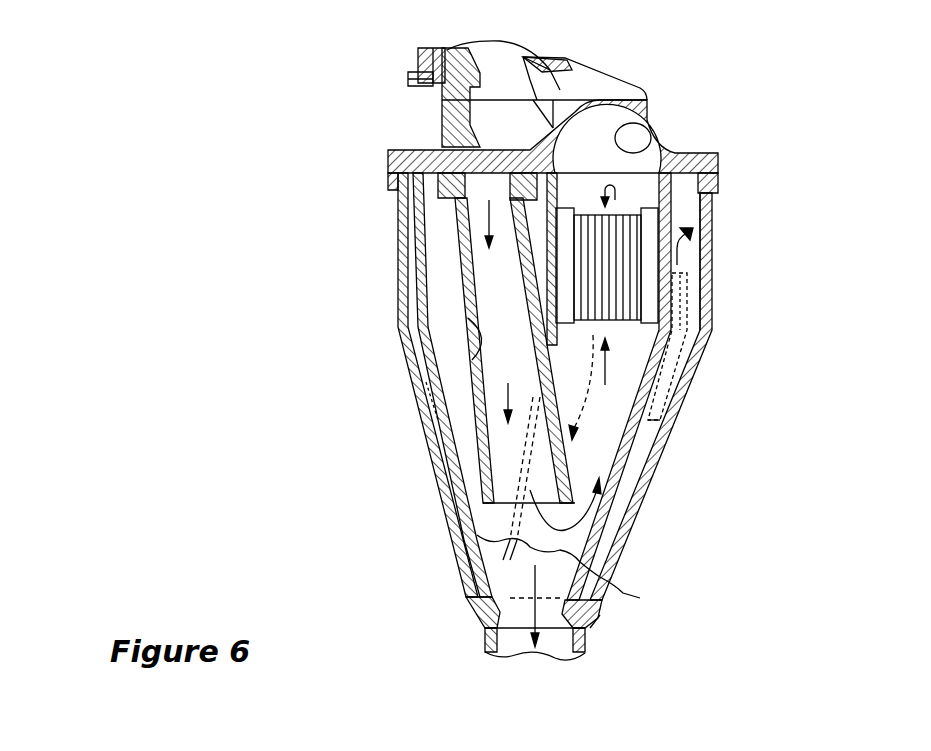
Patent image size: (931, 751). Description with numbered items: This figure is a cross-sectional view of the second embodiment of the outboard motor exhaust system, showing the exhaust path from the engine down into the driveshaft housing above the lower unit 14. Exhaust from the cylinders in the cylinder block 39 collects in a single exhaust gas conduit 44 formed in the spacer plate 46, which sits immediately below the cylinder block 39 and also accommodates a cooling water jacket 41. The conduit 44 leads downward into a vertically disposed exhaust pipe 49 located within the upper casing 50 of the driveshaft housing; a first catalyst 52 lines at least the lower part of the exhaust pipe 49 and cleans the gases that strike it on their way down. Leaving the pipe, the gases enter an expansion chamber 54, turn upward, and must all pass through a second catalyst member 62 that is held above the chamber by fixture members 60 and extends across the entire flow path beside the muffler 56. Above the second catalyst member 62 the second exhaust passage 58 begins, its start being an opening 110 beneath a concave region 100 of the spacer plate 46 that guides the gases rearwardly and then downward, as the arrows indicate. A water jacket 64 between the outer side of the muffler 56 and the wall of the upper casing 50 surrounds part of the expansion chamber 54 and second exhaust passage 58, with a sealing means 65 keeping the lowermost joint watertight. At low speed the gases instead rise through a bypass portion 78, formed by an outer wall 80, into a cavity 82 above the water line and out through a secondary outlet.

The lower unit 14 is at (485, 645).
The cylinder block 39 is at (545, 58).
The cooling water jacket 41 is at (595, 90).
The exhaust gas conduit 44 is at (480, 147).
The spacer plate 46 is at (652, 93).
The exhaust pipe 49 is at (455, 265).
The upper casing 50 is at (712, 257).
The first catalyst 52 is at (467, 377).
The expansion chamber 54 is at (450, 492).
The muffler 56 is at (620, 480).
The second exhaust passage 58 is at (575, 572).
The fixture members 60 is at (718, 181).
The second catalyst member 62 is at (630, 283).
The water jacket 64 is at (658, 437).
The sealing means 65 is at (600, 615).
The bypass portion 78 is at (712, 365).
The outer wall 80 is at (695, 332).
The cavity 82 is at (690, 198).
The concave region 100 is at (668, 145).
The opening 110 is at (716, 153).